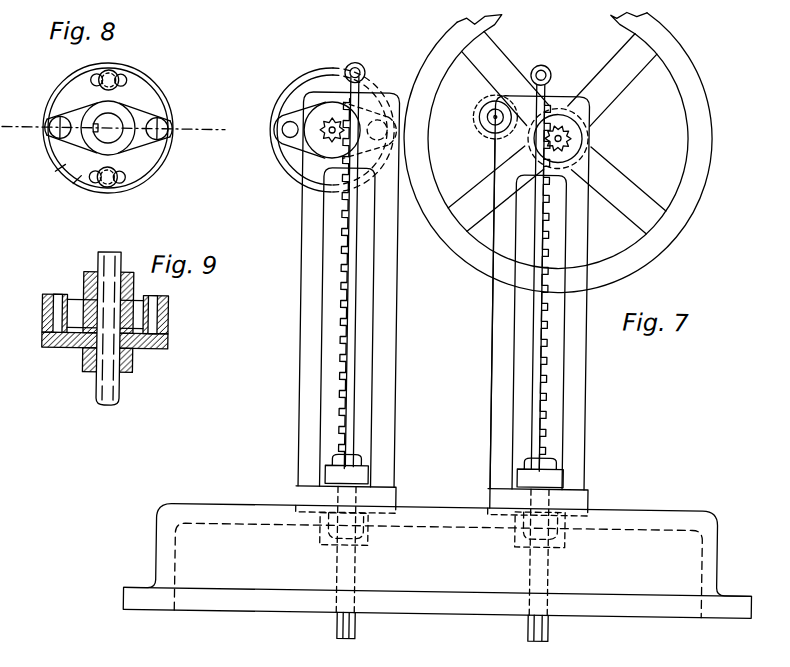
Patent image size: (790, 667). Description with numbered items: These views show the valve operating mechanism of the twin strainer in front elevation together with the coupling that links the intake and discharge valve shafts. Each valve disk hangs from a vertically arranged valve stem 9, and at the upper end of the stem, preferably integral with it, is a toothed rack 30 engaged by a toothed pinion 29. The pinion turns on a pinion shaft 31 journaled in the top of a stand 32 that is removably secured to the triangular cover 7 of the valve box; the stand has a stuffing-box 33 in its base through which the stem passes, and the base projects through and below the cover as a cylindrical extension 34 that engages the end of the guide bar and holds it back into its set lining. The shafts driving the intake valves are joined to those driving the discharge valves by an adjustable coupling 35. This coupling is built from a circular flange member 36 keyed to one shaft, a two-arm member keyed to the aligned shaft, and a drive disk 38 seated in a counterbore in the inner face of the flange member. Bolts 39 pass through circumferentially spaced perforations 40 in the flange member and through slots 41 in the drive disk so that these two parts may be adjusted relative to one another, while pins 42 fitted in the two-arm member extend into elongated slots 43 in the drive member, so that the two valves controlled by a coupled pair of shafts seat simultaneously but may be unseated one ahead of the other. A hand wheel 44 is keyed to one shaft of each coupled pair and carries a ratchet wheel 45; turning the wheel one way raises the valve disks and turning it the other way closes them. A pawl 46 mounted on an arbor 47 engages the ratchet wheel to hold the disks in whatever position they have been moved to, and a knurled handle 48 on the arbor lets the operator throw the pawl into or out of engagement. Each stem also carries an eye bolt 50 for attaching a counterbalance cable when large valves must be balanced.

In FIG. 7, the triangular cover 7 is at (455, 614).
In FIG. 7, the valve stem 9 is at (341, 630).
In FIG. 8, the valve stem 9 is at (113, 119).
In FIG. 7, the toothed pinion 29 is at (322, 146).
In FIG. 7, the toothed rack 30 is at (340, 291).
In FIG. 7, the pinion shaft 31 is at (584, 150).
In FIG. 8, the pinion shaft 31 is at (118, 138).
In FIG. 9, the pinion shaft 31 is at (97, 256).
In FIG. 7, the stand 32 is at (300, 221).
In FIG. 7, the stuffing-box 33 is at (327, 470).
In FIG. 7, the cylindrical extension 34 is at (372, 538).
In FIG. 8, the cylindrical extension 34 is at (148, 110).
In FIG. 9, the cylindrical extension 34 is at (168, 314).
In FIG. 8, the adjustable coupling 35 is at (200, 70).
In FIG. 9, the adjustable coupling 35 is at (56, 292).
In FIG. 8, the circular flange member 36 is at (56, 172).
In FIG. 9, the circular flange member 36 is at (166, 350).
In FIG. 8, the drive disk 38 is at (80, 180).
In FIG. 9, the drive disk 38 is at (168, 335).
In FIG. 8, the bolt 39 is at (118, 75).
In FIG. 8, the perforation 40 is at (122, 86).
In FIG. 8, the slot 41 is at (77, 74).
In FIG. 8, the pin 42 is at (56, 134).
In FIG. 9, the pin 42 is at (50, 296).
In FIG. 8, the elongated slot 43 is at (62, 142).
In FIG. 7, the hand wheel 44 is at (706, 100).
In FIG. 7, the ratchet wheel 45 is at (581, 130).
In FIG. 7, the pawl 46 is at (514, 90).
In FIG. 7, the arbor 47 is at (476, 118).
In FIG. 7, the knurled handle 48 is at (488, 136).
In FIG. 7, the eye bolt 50 is at (361, 66).